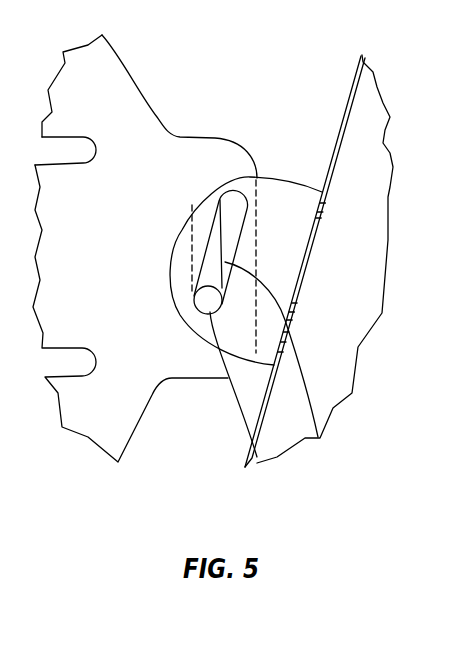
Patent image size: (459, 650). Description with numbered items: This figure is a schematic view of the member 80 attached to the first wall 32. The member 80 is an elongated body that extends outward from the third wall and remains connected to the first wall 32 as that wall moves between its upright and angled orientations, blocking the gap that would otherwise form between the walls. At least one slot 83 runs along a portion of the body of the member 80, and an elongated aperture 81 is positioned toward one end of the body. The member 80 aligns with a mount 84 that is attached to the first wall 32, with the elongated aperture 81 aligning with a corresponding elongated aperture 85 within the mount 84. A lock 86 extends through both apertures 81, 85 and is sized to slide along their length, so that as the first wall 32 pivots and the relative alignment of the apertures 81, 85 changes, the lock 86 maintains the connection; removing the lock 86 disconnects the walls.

The first wall 32 is at (375, 197).
The member 80 is at (125, 92).
The elongated aperture 81 is at (200, 216).
The slot 83 is at (48, 150).
The mount 84 is at (272, 200).
The elongated aperture 85 is at (318, 437).
The lock 86 is at (258, 463).